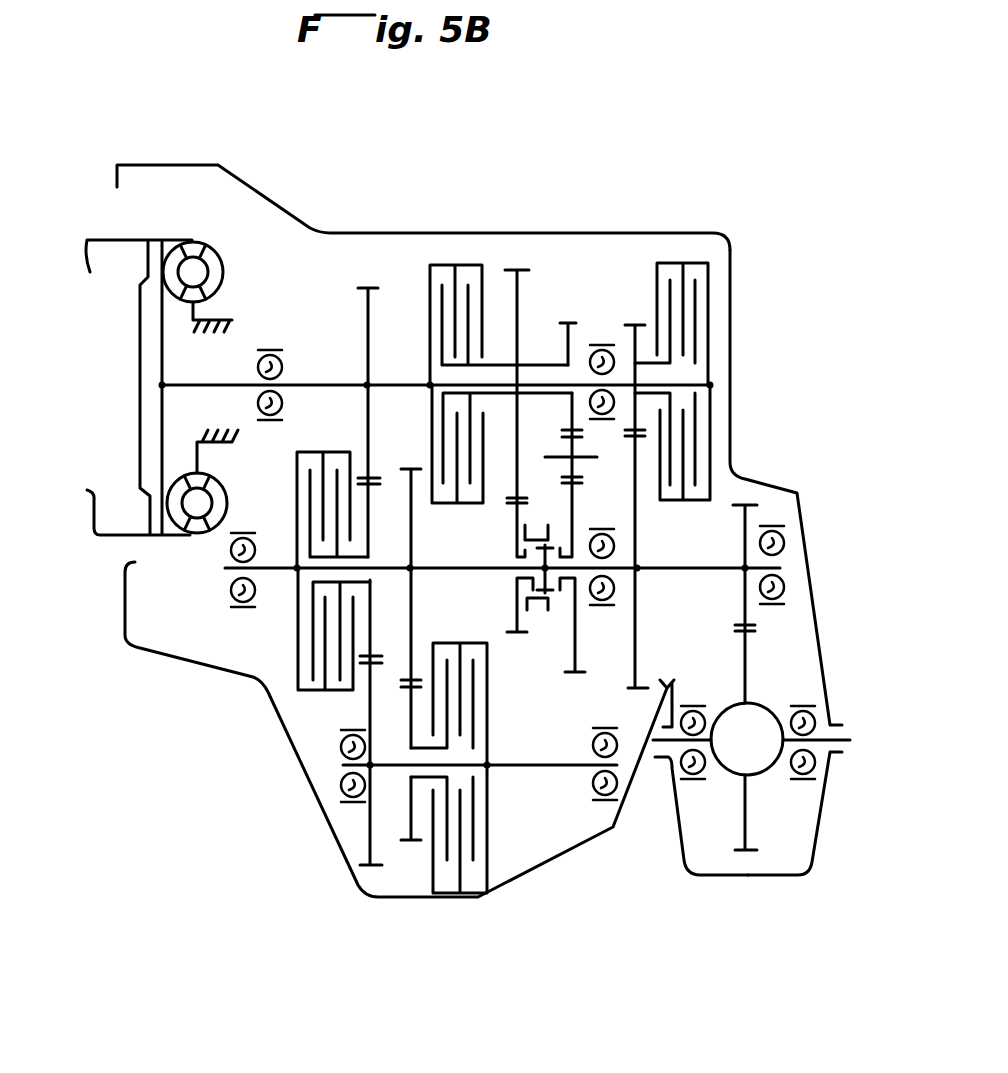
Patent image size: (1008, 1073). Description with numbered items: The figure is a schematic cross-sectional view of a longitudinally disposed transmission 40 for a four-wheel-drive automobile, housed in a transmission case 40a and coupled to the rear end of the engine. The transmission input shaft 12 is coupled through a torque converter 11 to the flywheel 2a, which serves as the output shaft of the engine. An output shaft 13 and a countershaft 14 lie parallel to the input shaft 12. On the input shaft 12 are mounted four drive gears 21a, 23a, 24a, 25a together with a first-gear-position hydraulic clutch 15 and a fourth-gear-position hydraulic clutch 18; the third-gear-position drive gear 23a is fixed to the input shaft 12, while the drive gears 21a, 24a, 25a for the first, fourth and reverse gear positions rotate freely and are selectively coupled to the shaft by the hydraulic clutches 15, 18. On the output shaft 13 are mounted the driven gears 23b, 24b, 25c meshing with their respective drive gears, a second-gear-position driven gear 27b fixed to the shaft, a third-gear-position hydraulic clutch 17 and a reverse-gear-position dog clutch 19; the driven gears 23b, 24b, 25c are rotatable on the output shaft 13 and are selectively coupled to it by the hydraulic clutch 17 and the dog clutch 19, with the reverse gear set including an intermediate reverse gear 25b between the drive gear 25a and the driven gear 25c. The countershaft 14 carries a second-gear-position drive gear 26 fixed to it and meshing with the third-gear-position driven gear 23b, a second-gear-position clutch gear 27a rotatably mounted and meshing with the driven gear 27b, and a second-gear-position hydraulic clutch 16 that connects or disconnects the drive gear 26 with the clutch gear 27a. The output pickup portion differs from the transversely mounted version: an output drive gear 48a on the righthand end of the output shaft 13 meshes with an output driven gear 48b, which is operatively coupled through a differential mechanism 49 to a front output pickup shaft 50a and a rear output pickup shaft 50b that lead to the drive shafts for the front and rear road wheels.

The flywheel 2a is at (106, 257).
The torque converter 11 is at (217, 270).
The transmission input shaft 12 is at (312, 383).
The output shaft 13 is at (440, 570).
The countershaft 14 is at (533, 768).
The first-gear-position hydraulic clutch 15 is at (670, 263).
The second-gear-position hydraulic clutch 16 is at (487, 895).
The third-gear-position hydraulic clutch 17 is at (318, 452).
The fourth-gear-position hydraulic clutch 18 is at (445, 265).
The dog clutch 19 is at (548, 615).
The first-gear-position drive gear 21a is at (633, 325).
The third-gear-position drive gear 23a is at (367, 288).
The third-gear-position driven gear 23b is at (375, 483).
The fourth-gear-position drive gear 24a is at (520, 268).
The fourth-gear-position driven gear 24b is at (517, 632).
The reverse-gear-position drive gear 25a is at (568, 323).
The reverse gear 25b is at (580, 468).
The reverse-gear-position driven gear 25c is at (575, 672).
The second-gear-position drive gear 26 is at (376, 868).
The second-gear-position clutch gear 27a is at (413, 842).
The second-gear-position driven gear 27b is at (410, 468).
The transmission 40 is at (628, 80).
The transmission case 40a is at (732, 383).
The output drive gear 48a is at (750, 518).
The output driven gear 48b is at (750, 828).
The differential mechanism 49 is at (763, 712).
The front output pickup shaft 50a is at (657, 757).
The rear output pickup shaft 50b is at (832, 752).